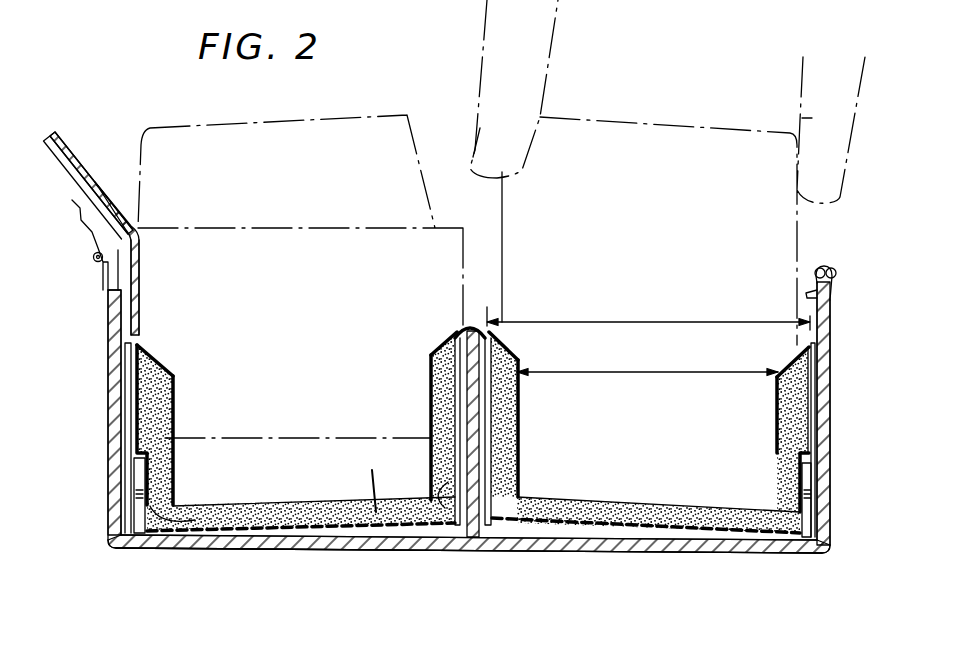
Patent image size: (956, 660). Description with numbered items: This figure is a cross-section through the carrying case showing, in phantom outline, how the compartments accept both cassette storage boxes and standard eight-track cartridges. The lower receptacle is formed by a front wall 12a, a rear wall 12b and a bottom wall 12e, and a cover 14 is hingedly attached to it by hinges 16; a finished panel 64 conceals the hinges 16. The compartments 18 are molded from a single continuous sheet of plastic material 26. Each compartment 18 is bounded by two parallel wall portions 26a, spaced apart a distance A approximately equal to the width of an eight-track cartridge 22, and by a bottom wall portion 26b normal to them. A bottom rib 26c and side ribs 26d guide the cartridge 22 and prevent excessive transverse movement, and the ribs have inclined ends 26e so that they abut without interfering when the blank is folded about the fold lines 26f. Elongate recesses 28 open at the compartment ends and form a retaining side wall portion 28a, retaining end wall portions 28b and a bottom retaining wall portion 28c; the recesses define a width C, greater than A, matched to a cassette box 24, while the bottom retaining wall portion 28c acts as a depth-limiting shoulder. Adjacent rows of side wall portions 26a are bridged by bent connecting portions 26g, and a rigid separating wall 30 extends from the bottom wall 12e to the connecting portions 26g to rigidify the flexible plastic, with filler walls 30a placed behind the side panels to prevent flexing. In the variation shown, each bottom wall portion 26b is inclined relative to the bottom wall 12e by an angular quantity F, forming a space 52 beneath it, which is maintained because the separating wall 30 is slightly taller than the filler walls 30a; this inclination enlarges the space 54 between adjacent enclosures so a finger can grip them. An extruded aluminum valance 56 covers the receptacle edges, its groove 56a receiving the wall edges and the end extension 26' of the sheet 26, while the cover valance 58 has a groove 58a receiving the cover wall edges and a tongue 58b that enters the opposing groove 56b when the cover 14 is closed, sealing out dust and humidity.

The front wall 12a is at (830, 499).
The rear wall 12b is at (109, 414).
The bottom wall 12e is at (258, 548).
The cover 14 is at (66, 182).
The hinge 16 is at (92, 268).
The compartment 18 is at (303, 404).
The 8-track cartridge 22 is at (703, 138).
The cassette box 24 is at (449, 231).
The sheet of material 26 is at (472, 463).
The end extension 26' is at (774, 372).
The parallel wall portion 26a is at (134, 506).
The bottom wall portion 26b is at (208, 540).
The bottom rib 26c is at (328, 505).
The side rib 26d is at (168, 413).
The inclined end 26e is at (166, 368).
The fold line 26f is at (131, 549).
The connecting portion 26g is at (476, 322).
The elongate recess 28 is at (177, 388).
The retaining side wall portion 28a is at (130, 387).
The retaining end wall portion 28b is at (146, 350).
The bottom retaining wall portion 28c is at (148, 450).
The separating wall 30 is at (467, 540).
The filler wall 30a is at (128, 523).
The space 52 is at (335, 548).
The space 54 is at (489, 238).
The valance 56 is at (841, 308).
The groove 56a is at (838, 283).
The groove 56b is at (825, 266).
The valance 58 is at (121, 212).
The groove 58a is at (96, 237).
The tongue 58b is at (117, 253).
The panel 64 is at (103, 202).
The width dimension A is at (620, 373).
The width dimension C is at (648, 312).
The angular quantity F is at (382, 553).